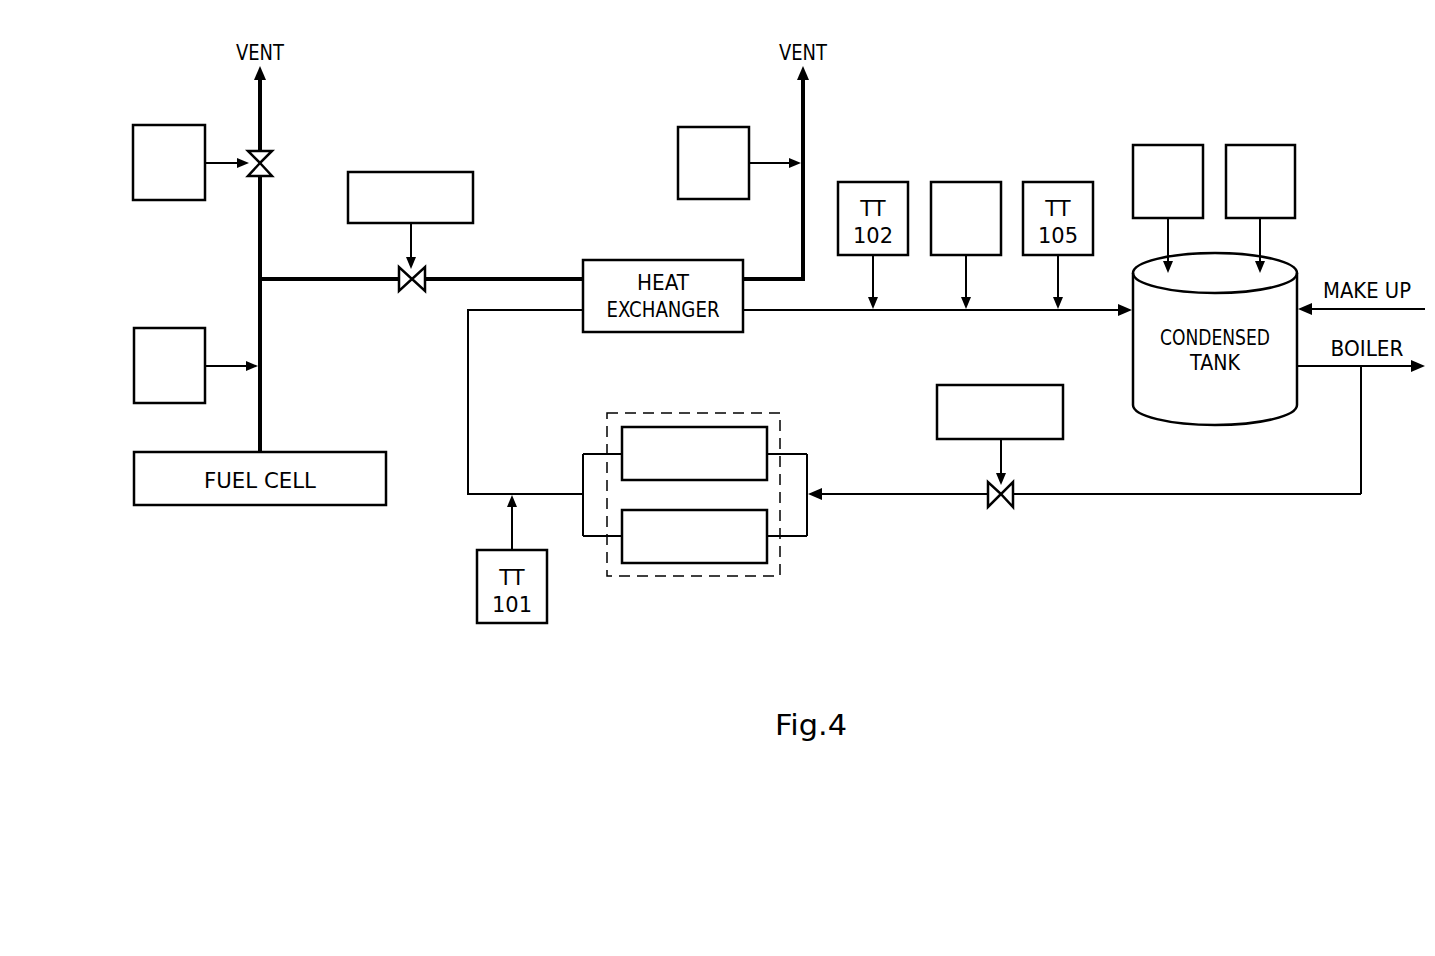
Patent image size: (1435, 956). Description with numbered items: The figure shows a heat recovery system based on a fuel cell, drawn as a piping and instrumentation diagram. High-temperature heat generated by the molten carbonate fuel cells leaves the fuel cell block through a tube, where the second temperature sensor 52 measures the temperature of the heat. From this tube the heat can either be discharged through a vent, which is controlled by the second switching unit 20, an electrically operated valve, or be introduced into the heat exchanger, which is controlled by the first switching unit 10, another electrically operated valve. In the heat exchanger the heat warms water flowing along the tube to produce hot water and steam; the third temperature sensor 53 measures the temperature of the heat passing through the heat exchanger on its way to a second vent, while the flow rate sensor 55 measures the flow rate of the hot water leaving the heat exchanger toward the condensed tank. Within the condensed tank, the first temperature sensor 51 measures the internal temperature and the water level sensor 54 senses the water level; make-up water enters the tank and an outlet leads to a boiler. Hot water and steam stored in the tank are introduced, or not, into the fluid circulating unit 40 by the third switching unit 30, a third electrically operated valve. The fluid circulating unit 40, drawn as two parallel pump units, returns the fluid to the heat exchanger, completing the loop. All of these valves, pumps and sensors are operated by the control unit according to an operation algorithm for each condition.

The second switching unit 20 is at (168, 125).
The first switching unit 10 is at (410, 172).
The second temperature sensor 52 is at (168, 328).
The third temperature sensor 53 is at (713, 127).
The flow rate sensor 55 is at (966, 182).
The first temperature sensor 51 is at (1168, 145).
The water level sensor 54 is at (1260, 145).
The third switching unit 30 is at (1000, 385).
The fluid circulating unit 40 is at (778, 413).